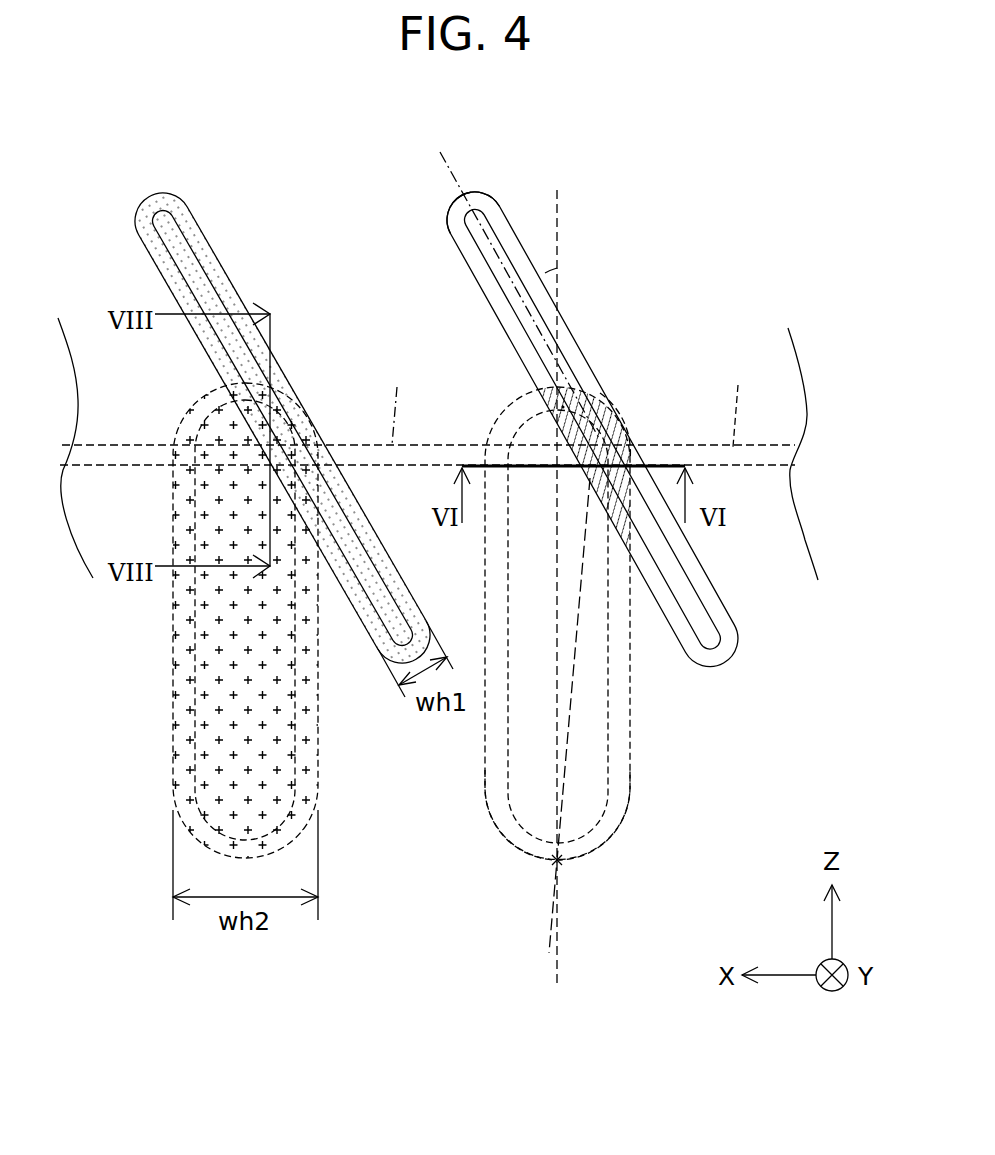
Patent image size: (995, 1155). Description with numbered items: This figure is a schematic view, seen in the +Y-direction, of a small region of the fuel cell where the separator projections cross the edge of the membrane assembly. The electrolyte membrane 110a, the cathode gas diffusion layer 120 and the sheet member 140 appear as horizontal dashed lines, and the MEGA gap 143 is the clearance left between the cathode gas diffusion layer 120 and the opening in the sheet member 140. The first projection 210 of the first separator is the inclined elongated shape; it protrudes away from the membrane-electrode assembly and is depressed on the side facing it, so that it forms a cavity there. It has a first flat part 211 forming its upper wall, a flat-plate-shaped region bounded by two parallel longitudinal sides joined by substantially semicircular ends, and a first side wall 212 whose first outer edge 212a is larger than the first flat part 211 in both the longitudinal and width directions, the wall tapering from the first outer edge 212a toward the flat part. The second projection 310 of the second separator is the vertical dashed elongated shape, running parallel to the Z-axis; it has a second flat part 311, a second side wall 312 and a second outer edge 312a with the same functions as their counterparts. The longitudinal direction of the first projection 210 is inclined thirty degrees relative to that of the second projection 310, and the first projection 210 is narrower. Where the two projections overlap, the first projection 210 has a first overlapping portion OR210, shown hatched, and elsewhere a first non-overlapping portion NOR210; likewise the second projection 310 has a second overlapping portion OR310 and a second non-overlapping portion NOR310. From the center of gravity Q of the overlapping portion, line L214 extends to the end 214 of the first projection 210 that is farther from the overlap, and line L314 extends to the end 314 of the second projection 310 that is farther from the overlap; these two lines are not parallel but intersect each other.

The first projection 210 is at (240, 282).
The first non-overlapping portion NOR210 is at (185, 267).
The first overlapping portion OR210 is at (613, 398).
The first side wall 212 is at (470, 245).
The first outer edge 212a is at (458, 232).
The first flat part 211 is at (542, 349).
The end of the first projection 214 is at (456, 206).
The line L214 is at (502, 243).
The MEGA gap 143 is at (402, 401).
The electrolyte membrane 110a is at (745, 403).
The cathode gas diffusion layer 120 is at (770, 448).
The sheet member 140 is at (770, 465).
The second projection 310 is at (190, 697).
The second non-overlapping portion NOR310 is at (222, 642).
The second overlapping portion OR310 is at (627, 423).
The second flat part 311 is at (520, 770).
The second side wall 312 is at (500, 830).
The second outer edge 312a is at (628, 793).
The end of the second projection 314 is at (560, 860).
The line L314 is at (630, 650).
The center of gravity Q is at (560, 405).